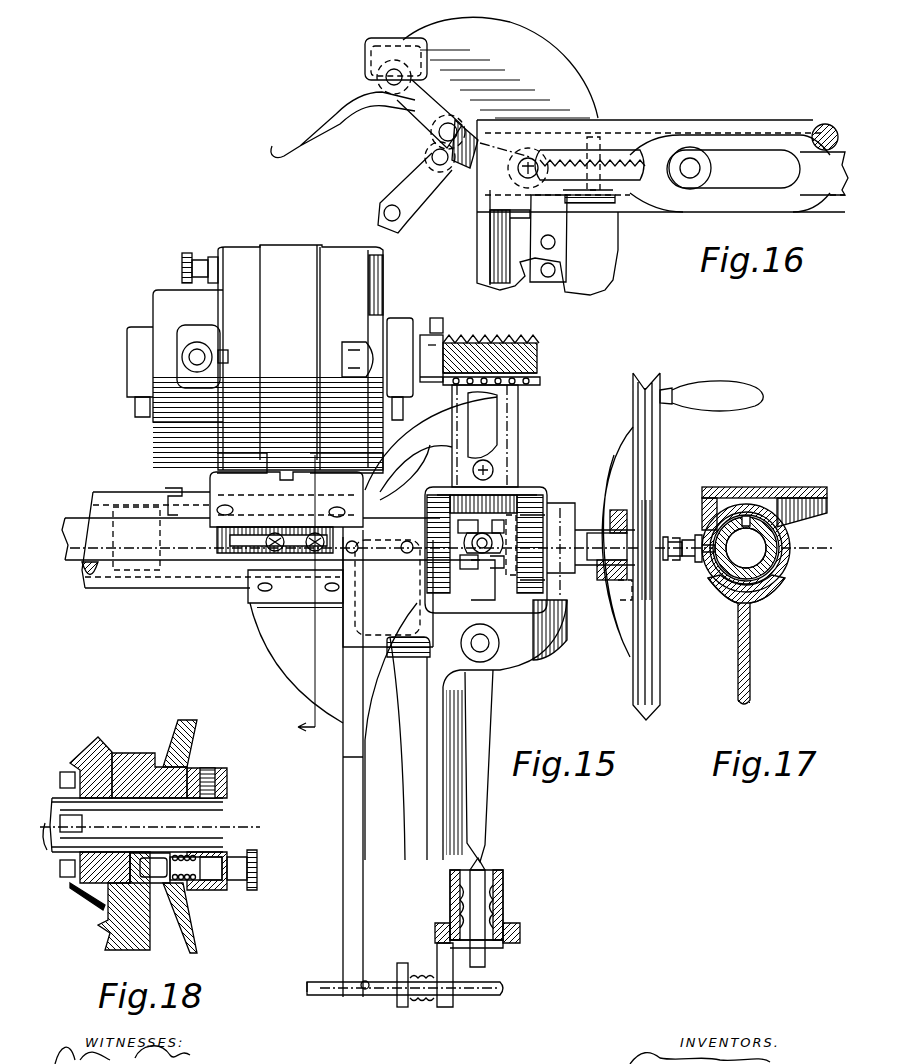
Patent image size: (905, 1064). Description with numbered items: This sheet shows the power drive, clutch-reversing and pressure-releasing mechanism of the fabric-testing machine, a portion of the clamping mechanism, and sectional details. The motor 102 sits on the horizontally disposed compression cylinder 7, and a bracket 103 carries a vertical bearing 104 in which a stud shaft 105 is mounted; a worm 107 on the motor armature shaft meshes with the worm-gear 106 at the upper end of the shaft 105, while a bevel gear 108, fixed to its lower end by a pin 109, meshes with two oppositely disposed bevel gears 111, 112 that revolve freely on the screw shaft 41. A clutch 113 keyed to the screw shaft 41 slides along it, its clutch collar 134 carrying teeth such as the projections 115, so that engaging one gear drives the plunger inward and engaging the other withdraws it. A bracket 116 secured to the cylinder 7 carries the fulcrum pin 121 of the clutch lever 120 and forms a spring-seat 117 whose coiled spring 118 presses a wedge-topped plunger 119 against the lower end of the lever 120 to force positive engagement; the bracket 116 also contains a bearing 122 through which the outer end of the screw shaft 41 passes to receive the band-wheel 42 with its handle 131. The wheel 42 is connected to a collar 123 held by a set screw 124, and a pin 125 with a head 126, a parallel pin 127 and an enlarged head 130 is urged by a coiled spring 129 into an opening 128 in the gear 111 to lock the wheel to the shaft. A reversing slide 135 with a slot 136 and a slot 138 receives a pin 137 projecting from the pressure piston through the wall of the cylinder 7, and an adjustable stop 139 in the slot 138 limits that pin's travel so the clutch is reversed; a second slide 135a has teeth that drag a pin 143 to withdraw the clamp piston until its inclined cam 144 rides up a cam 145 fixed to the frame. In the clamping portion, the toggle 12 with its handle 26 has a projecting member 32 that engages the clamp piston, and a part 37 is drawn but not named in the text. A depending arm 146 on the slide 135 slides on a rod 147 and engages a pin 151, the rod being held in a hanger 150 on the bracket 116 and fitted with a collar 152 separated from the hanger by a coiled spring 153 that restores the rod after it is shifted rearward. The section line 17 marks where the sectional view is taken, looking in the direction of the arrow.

In FIG. 16, the compression cylinder 7 is at (656, 118).
In FIG. 15, the compression cylinder 7 is at (183, 599).
In FIG. 16, the toggle 12 is at (412, 118).
In FIG. 16, the handle 26 is at (325, 120).
In FIG. 16, the projecting member 32 is at (470, 168).
In FIG. 16, the slide 37 is at (570, 205).
In FIG. 15, the screw shaft 41 is at (510, 572).
In FIG. 18, the screw shaft 41 is at (58, 868).
In FIG. 15, the band-wheel 42 is at (652, 363).
In FIG. 18, the band-wheel 42 is at (173, 721).
In FIG. 15, the motor 102 is at (276, 272).
In FIG. 15, the bracket 103 is at (405, 475).
In FIG. 17, the bracket 103 is at (741, 479).
In FIG. 15, the vertical bearing 104 is at (527, 413).
In FIG. 15, the stud shaft 105 is at (500, 443).
In FIG. 15, the worm-gear 106 is at (547, 361).
In FIG. 15, the worm 107 is at (490, 324).
In FIG. 15, the bevel gear 108 is at (520, 486).
In FIG. 15, the pin 109 is at (494, 470).
In FIG. 15, the bevel gear 111 is at (527, 571).
In FIG. 18, the bevel gear 111 is at (83, 742).
In FIG. 15, the bevel gear 112 is at (458, 582).
In FIG. 15, the clutch 113 is at (485, 556).
In FIG. 15, the projections 115 is at (430, 492).
In FIG. 15, the bracket 116 is at (282, 641).
In FIG. 15, the spring-seat 117 is at (505, 890).
In FIG. 15, the coiled spring 118 is at (522, 930).
In FIG. 15, the plunger 119 is at (493, 862).
In FIG. 15, the lever 120 is at (485, 816).
In FIG. 15, the pin 121 is at (485, 648).
In FIG. 15, the bearing 122 is at (572, 503).
In FIG. 18, the bearing 122 is at (118, 935).
In FIG. 18, the collar 123 is at (233, 771).
In FIG. 18, the set screw 124 is at (208, 765).
In FIG. 18, the pin 125 is at (210, 855).
In FIG. 15, the head 126 is at (641, 590).
In FIG. 18, the head 126 is at (264, 882).
In FIG. 18, the parallel pin 127 is at (210, 890).
In FIG. 18, the opening 128 is at (125, 840).
In FIG. 18, the coiled spring 129 is at (178, 852).
In FIG. 18, the enlarged head 130 is at (151, 868).
In FIG. 15, the handle 131 is at (737, 372).
In FIG. 15, the clutch collar 134 is at (465, 568).
In FIG. 17, the slide 135 is at (695, 538).
In FIG. 16, the second slide 135a is at (823, 173).
In FIG. 15, the second slide 135a is at (271, 539).
In FIG. 15, the slot 136 is at (458, 532).
In FIG. 15, the pin 137 is at (312, 552).
In FIG. 17, the pin 137 is at (675, 560).
In FIG. 17, the slot 138 is at (697, 533).
In FIG. 15, the adjustable stop 139 is at (268, 550).
In FIG. 17, the adjustable stop 139 is at (666, 537).
In FIG. 16, the pin 143 is at (540, 160).
In FIG. 16, the inclined cam 144 is at (510, 246).
In FIG. 16, the cam 145 is at (560, 240).
In FIG. 15, the depending arm 146 is at (334, 822).
In FIG. 15, the rod 147 is at (383, 1007).
In FIG. 15, the hanger 150 is at (455, 972).
In FIG. 15, the pin 151 is at (367, 978).
In FIG. 15, the collar 152 is at (408, 1017).
In FIG. 15, the coiled spring 153 is at (435, 1013).
In FIG. 15, the section line 17 is at (307, 605).